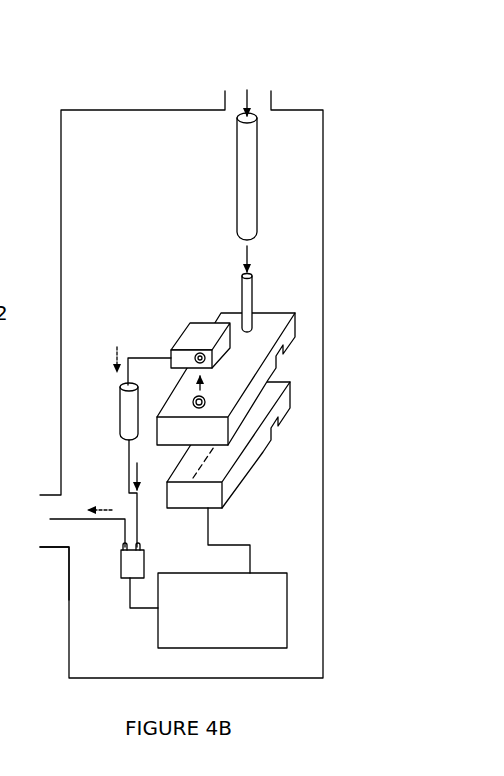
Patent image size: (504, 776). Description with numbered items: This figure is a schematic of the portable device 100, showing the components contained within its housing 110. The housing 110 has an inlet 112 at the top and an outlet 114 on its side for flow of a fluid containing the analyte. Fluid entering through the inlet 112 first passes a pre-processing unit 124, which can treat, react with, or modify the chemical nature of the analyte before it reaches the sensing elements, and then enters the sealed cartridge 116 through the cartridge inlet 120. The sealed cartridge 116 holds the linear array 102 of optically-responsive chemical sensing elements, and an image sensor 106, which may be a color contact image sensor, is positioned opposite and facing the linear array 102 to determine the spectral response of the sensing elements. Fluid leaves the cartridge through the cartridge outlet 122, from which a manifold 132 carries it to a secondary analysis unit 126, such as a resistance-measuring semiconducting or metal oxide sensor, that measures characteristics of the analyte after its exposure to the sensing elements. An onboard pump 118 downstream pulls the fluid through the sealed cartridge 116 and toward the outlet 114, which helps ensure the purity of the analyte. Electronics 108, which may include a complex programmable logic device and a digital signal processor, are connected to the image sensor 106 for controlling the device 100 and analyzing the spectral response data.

The portable device 100 is at (82, 92).
The housing 110 is at (324, 170).
The inlet 112 is at (272, 102).
The outlet 114 is at (45, 548).
The pre-processing unit 124 is at (235, 185).
The cartridge inlet 120 is at (240, 302).
The sealed cartridge 116 is at (296, 374).
The linear array 102 is at (290, 333).
The cartridge outlet 122 is at (206, 399).
The image sensor 106 is at (272, 413).
The manifold 132 is at (183, 333).
The secondary analysis unit 126 is at (123, 417).
The onboard pump 118 is at (135, 565).
The electronics 108 is at (222, 578).